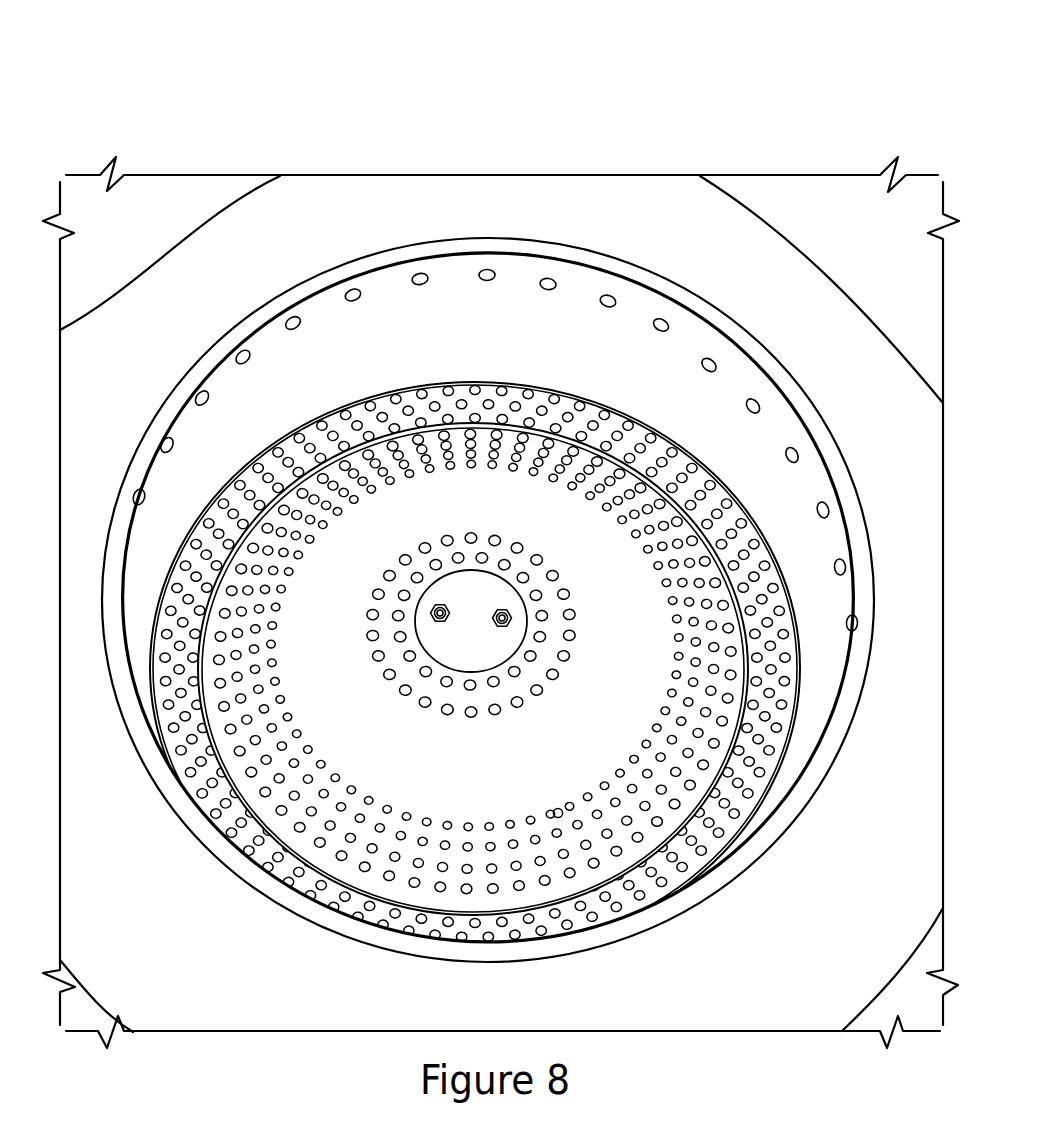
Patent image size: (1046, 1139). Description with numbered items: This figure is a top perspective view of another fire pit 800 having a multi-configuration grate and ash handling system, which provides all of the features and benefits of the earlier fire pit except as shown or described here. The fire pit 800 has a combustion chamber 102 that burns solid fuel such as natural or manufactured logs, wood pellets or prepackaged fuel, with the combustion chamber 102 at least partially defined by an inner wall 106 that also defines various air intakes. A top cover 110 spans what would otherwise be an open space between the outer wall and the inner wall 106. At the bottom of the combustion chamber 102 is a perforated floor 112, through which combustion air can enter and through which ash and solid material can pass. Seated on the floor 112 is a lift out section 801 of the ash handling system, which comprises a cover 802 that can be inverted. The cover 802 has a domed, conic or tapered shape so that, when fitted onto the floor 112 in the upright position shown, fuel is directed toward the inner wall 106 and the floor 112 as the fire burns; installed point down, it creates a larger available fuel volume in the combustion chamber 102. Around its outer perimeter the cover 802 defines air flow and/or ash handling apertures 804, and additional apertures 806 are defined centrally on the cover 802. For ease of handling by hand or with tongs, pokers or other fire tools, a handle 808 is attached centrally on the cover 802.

The fire pit 800 is at (608, 64).
The top cover 110 is at (829, 272).
The combustion chamber 102 is at (188, 430).
The inner wall 106 is at (263, 350).
The perforated floor 112 is at (183, 746).
The lift out section 801 is at (752, 692).
The cover 802 is at (588, 540).
The apertures 804 is at (557, 809).
The additional apertures 806 is at (498, 542).
The handle 808 is at (438, 603).